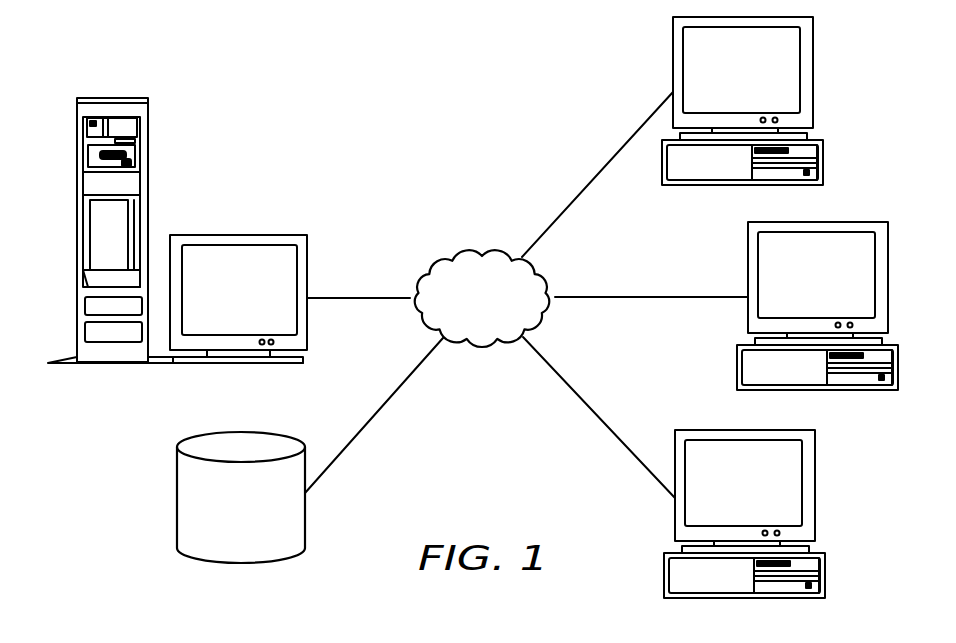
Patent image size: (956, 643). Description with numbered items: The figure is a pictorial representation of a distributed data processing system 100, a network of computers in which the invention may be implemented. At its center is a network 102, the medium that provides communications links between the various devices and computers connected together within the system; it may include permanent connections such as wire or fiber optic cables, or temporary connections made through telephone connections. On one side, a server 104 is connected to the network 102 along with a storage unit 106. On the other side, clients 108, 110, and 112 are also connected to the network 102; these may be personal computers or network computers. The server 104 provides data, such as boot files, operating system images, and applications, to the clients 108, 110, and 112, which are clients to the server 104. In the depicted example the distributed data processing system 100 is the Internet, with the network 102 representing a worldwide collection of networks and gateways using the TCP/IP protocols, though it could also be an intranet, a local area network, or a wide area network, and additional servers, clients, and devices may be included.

The distributed data processing system 100 is at (356, 102).
The network 102 is at (501, 323).
The server 104 is at (221, 300).
The storage unit 106 is at (220, 540).
The client 108 is at (724, 83).
The client 110 is at (801, 288).
The client 112 is at (728, 497).